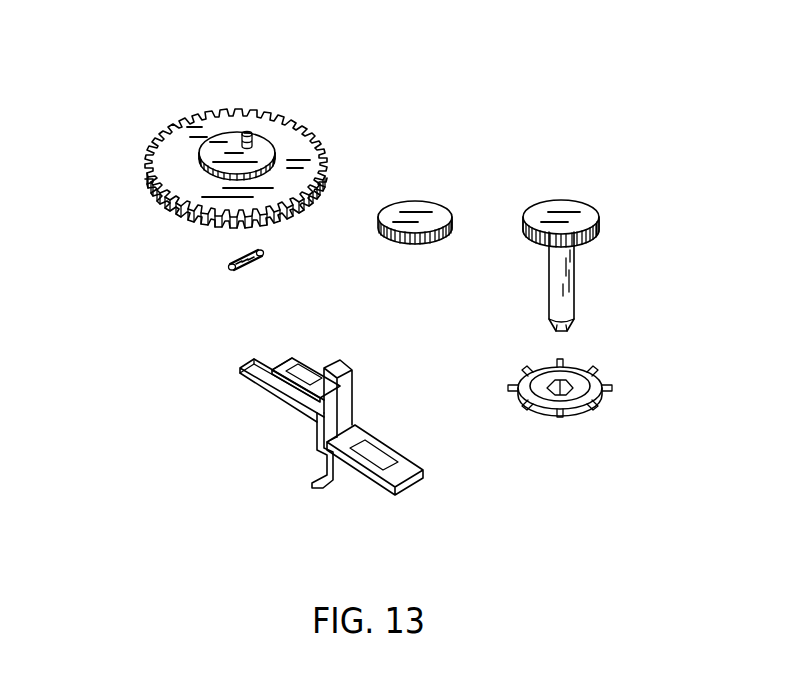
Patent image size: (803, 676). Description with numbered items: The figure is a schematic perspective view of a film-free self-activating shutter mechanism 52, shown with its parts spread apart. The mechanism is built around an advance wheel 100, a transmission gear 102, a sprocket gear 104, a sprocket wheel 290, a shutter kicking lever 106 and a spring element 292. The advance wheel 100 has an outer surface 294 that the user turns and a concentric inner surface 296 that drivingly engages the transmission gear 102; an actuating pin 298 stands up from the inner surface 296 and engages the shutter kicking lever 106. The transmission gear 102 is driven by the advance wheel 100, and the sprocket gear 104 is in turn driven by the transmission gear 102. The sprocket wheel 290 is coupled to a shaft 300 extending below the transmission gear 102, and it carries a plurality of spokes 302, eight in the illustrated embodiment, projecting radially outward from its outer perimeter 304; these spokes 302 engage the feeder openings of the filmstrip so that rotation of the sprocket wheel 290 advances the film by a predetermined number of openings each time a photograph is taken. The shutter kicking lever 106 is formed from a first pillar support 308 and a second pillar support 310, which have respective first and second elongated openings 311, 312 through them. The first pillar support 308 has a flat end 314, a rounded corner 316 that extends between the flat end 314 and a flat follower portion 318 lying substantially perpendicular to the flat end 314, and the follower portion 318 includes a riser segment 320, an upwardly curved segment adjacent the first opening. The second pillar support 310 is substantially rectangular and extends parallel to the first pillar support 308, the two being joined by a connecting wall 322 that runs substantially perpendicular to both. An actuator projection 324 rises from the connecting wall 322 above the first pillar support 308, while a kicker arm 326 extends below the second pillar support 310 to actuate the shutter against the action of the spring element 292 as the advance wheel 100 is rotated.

The shutter mechanism 52 is at (565, 60).
The advance wheel 100 is at (302, 128).
The transmission gear 102 is at (425, 205).
The sprocket gear 104 is at (604, 255).
The shutter kicking lever 106 is at (293, 410).
The sprocket wheel 290 is at (584, 407).
The spring element 292 is at (240, 258).
The outer surface 294 is at (244, 132).
The inner surface 296 is at (202, 155).
The actuating pin 298 is at (250, 132).
The shaft 300 is at (568, 282).
The spokes 302 is at (518, 390).
The outer perimeter 304 is at (565, 415).
The first pillar support 308 is at (222, 399).
The second pillar support 310 is at (411, 483).
The first elongated opening 311 is at (290, 400).
The second elongated opening 312 is at (368, 467).
The flat end 314 is at (240, 369).
The rounded corner 316 is at (248, 362).
The follower portion 318 is at (328, 340).
The riser segment 320 is at (292, 370).
The connecting wall 322 is at (348, 415).
The actuator projection 324 is at (352, 384).
The kicker arm 326 is at (325, 487).